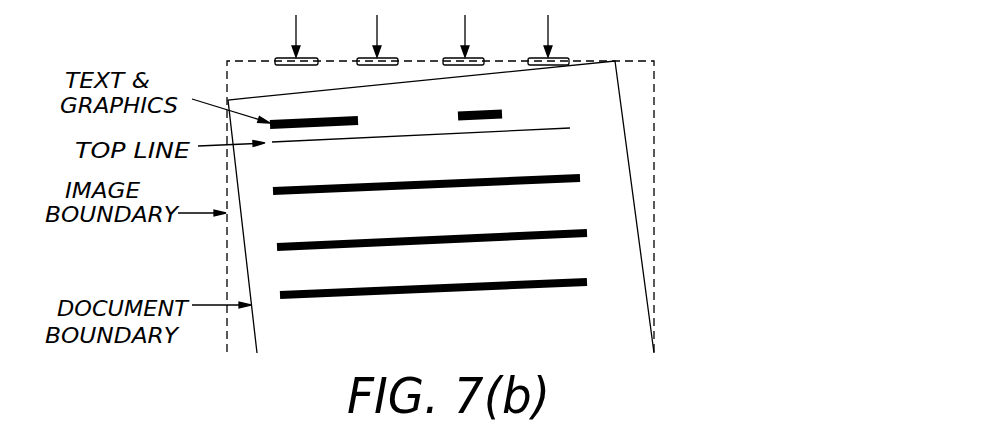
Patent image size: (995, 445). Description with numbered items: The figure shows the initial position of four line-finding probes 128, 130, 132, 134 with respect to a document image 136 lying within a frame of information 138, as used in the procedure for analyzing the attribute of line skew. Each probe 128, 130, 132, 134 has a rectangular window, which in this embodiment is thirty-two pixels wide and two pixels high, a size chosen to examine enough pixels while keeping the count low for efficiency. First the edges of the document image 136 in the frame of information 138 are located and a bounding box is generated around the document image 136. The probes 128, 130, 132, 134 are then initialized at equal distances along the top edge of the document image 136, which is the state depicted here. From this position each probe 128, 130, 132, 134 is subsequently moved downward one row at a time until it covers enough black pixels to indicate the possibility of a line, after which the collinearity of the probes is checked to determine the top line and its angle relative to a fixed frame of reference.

The probe 128 is at (277, 58).
The probe 130 is at (366, 57).
The probe 132 is at (449, 57).
The probe 134 is at (536, 60).
The document image 136 is at (630, 163).
The frame of information 138 is at (657, 115).